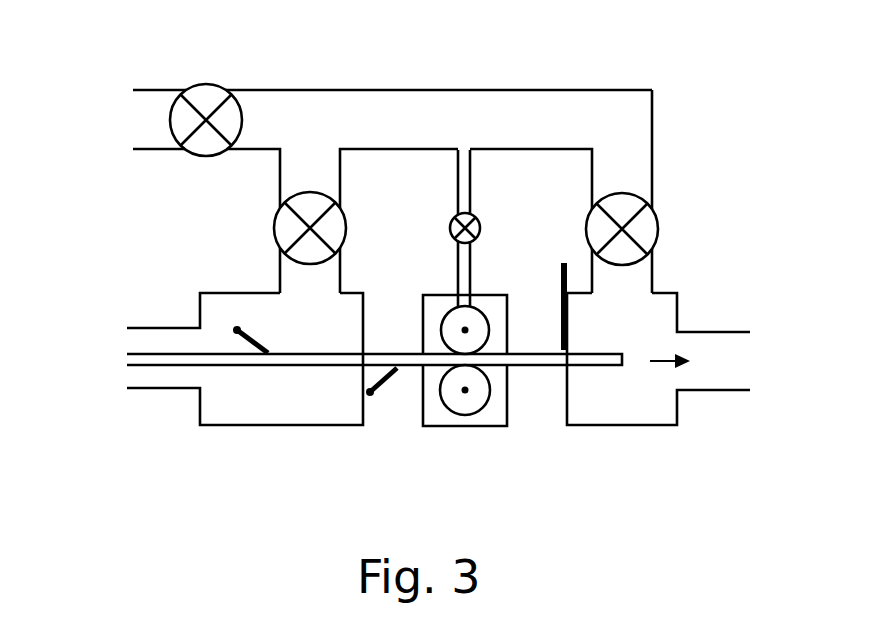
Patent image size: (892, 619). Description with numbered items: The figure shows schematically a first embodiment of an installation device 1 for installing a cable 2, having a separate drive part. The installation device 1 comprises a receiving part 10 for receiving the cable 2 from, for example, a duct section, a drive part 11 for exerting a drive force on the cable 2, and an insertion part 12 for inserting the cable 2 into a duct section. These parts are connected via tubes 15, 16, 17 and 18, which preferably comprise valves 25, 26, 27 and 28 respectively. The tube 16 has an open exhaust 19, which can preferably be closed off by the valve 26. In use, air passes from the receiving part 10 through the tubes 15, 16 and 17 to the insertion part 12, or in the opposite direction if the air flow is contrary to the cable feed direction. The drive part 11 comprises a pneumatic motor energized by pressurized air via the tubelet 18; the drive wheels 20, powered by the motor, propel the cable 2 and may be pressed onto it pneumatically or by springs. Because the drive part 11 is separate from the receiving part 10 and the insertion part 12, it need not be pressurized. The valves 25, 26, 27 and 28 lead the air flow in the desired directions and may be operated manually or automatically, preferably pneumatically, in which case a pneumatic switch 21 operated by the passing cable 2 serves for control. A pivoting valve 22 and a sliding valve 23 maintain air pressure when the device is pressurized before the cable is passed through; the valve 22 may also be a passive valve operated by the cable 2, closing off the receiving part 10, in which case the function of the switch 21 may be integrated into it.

The installation device 1 is at (722, 84).
The cable 2 is at (158, 357).
The receiving part 10 is at (282, 425).
The drive part 11 is at (465, 426).
The insertion part 12 is at (622, 425).
The tube 15 is at (280, 180).
The tube 16 is at (465, 90).
The tube 17 is at (652, 180).
The tubelet 18 is at (471, 180).
The open exhaust 19 is at (120, 118).
The drive wheels 20 is at (452, 308).
The pneumatic switch 21 is at (235, 327).
The pivoting valve 22 is at (372, 395).
The sliding valve 23 is at (560, 318).
The valve 25 is at (273, 228).
The valve 26 is at (207, 84).
The valve 27 is at (658, 229).
The valve 28 is at (482, 228).